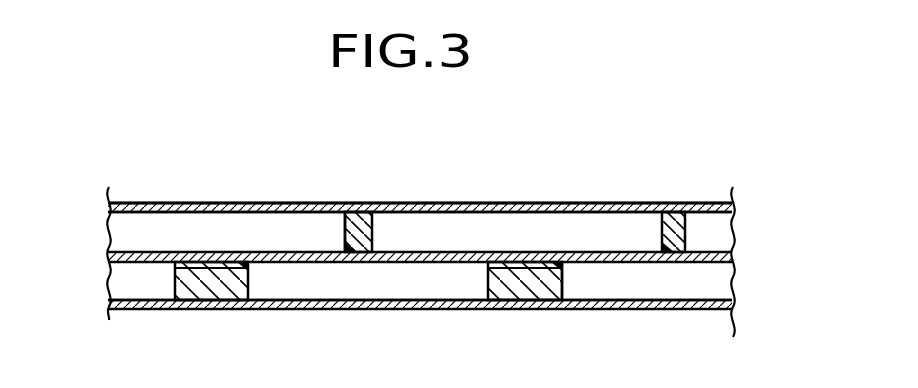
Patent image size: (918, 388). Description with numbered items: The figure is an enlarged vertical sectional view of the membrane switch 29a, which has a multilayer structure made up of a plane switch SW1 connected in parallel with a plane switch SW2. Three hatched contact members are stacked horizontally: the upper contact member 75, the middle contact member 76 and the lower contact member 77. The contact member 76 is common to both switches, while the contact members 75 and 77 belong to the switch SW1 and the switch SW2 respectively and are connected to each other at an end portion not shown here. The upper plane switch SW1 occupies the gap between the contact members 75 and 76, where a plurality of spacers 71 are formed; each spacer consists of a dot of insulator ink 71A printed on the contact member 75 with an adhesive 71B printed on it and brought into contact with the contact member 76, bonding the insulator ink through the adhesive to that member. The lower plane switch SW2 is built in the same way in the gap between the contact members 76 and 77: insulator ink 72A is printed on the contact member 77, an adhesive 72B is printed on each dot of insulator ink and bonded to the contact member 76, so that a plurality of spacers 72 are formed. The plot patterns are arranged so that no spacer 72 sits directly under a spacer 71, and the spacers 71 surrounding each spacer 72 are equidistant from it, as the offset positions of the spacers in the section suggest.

The contact member 75 is at (108, 205).
The contact member 76 is at (108, 258).
The contact member 77 is at (108, 303).
The membrane switch 29a is at (430, 203).
The spacers 71 is at (688, 230).
The insulator ink 71A is at (368, 212).
The adhesive 71B is at (345, 250).
The spacers 72 is at (176, 287).
The insulator ink 72A is at (538, 287).
The adhesive 72B is at (565, 265).
The plane switch SW1 is at (734, 234).
The plane switch SW2 is at (734, 287).